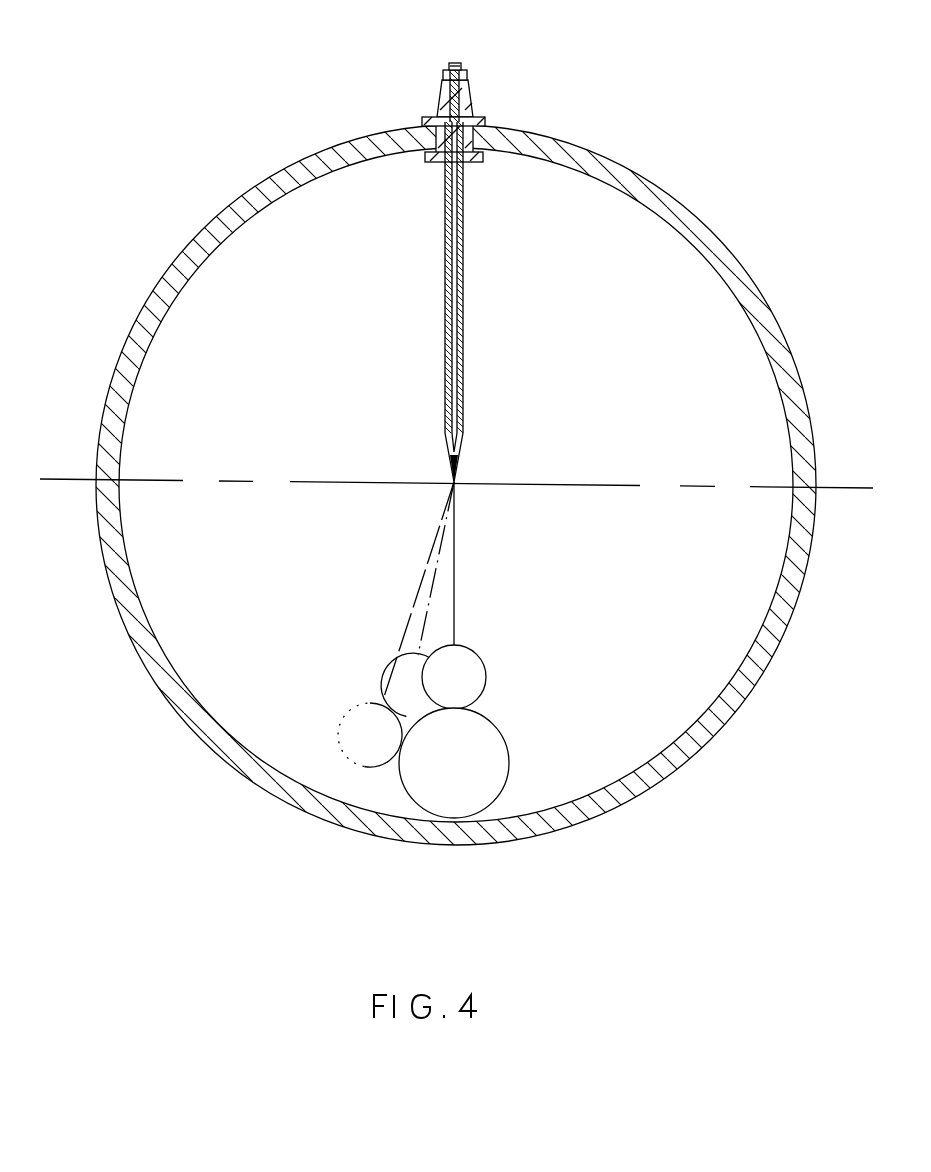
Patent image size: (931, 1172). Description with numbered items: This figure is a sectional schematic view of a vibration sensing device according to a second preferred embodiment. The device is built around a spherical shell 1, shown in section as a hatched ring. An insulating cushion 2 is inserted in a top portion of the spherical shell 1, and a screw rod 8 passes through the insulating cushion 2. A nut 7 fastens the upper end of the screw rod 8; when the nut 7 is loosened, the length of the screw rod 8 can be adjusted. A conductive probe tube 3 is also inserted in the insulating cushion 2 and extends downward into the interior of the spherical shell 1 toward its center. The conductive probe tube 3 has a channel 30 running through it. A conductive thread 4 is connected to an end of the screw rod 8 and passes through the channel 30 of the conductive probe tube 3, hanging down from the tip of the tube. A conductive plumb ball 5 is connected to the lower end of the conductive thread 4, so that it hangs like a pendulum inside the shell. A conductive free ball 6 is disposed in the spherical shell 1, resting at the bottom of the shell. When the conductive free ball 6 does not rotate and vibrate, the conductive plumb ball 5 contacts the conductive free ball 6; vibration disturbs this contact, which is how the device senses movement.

The spherical shell 1 is at (786, 630).
The insulating cushion 2 is at (436, 118).
The conductive probe tube 3 is at (491, 276).
The channel 30 is at (462, 293).
The conductive thread 4 is at (455, 586).
The conductive plumb ball 5 is at (460, 645).
The conductive free ball 6 is at (458, 805).
The nut 7 is at (463, 72).
The screw rod 8 is at (452, 64).